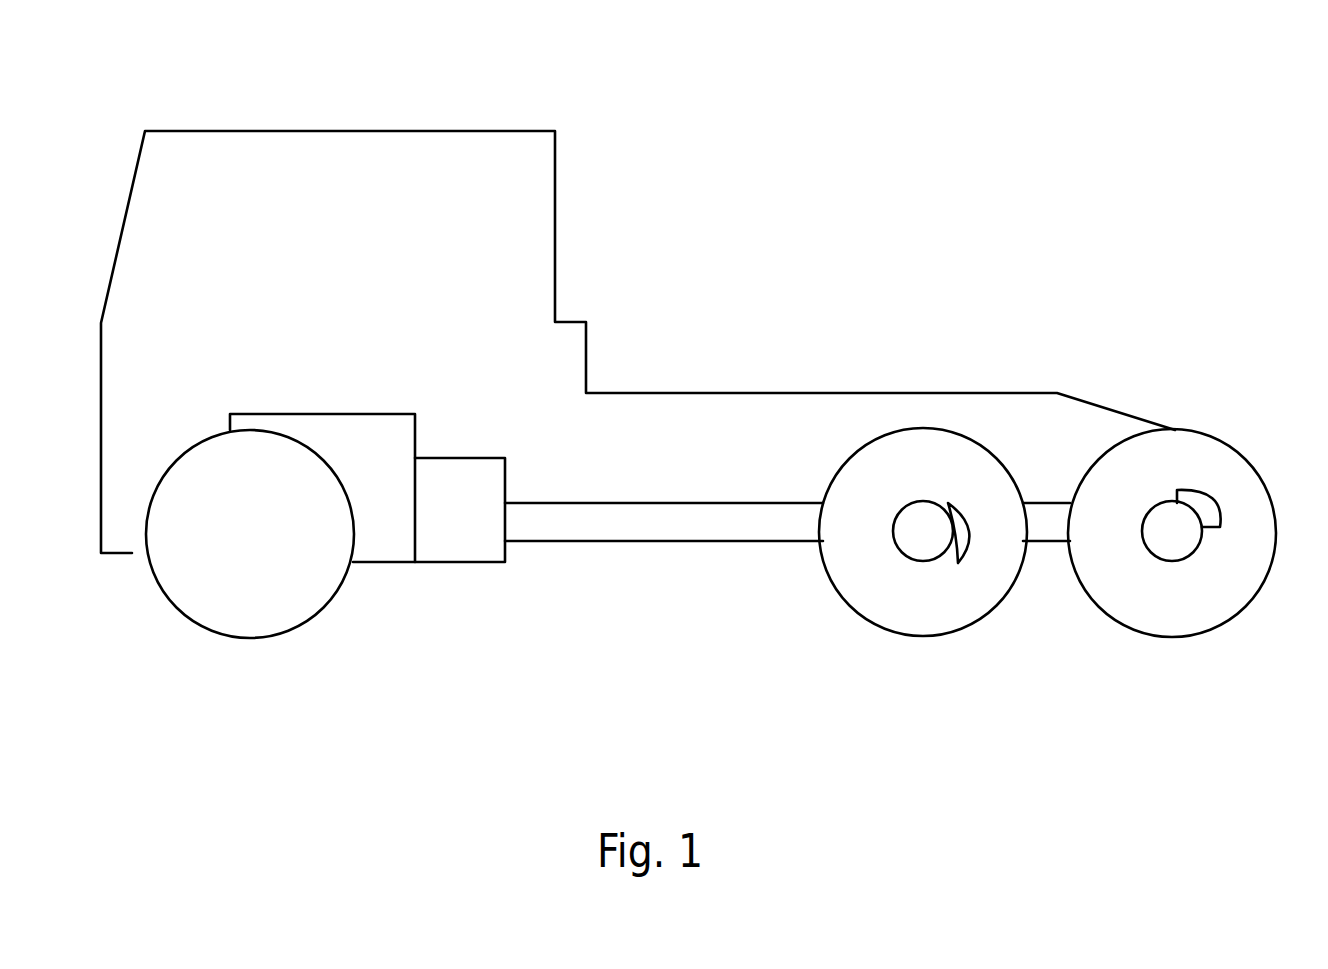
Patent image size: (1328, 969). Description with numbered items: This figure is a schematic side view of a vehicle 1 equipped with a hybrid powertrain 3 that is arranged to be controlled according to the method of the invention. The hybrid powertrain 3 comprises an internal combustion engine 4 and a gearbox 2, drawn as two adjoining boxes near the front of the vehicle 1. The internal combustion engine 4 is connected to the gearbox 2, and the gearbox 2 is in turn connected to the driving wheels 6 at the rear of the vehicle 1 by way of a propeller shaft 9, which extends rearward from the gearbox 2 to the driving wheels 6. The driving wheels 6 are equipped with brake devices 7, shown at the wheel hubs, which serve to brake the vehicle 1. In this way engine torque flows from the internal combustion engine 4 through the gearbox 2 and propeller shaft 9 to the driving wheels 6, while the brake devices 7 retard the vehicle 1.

The vehicle 1 is at (708, 96).
The gearbox 2 is at (505, 563).
The hybrid powertrain 3 is at (398, 509).
The internal combustion engine 4 is at (283, 412).
The driving wheels 6 is at (983, 620).
The brake devices 7 is at (948, 503).
The propeller shaft 9 is at (630, 542).